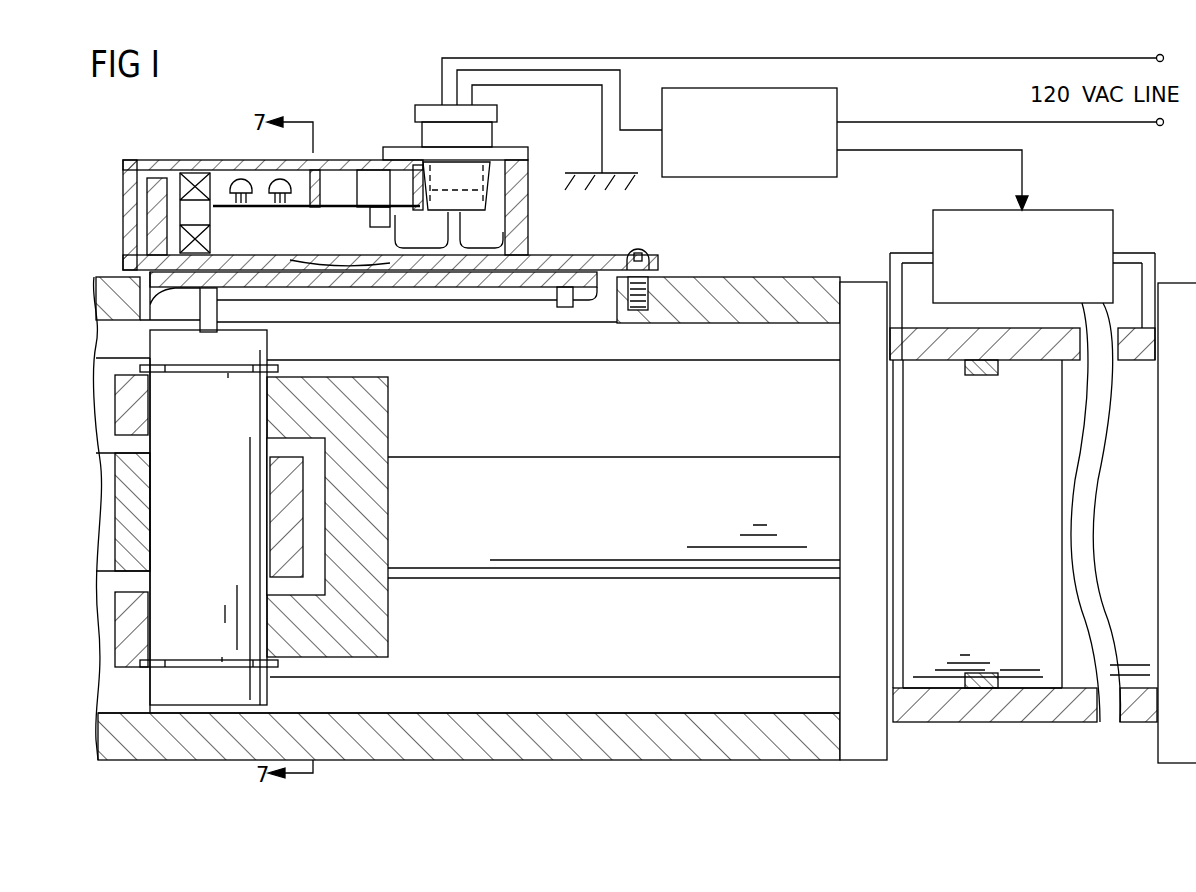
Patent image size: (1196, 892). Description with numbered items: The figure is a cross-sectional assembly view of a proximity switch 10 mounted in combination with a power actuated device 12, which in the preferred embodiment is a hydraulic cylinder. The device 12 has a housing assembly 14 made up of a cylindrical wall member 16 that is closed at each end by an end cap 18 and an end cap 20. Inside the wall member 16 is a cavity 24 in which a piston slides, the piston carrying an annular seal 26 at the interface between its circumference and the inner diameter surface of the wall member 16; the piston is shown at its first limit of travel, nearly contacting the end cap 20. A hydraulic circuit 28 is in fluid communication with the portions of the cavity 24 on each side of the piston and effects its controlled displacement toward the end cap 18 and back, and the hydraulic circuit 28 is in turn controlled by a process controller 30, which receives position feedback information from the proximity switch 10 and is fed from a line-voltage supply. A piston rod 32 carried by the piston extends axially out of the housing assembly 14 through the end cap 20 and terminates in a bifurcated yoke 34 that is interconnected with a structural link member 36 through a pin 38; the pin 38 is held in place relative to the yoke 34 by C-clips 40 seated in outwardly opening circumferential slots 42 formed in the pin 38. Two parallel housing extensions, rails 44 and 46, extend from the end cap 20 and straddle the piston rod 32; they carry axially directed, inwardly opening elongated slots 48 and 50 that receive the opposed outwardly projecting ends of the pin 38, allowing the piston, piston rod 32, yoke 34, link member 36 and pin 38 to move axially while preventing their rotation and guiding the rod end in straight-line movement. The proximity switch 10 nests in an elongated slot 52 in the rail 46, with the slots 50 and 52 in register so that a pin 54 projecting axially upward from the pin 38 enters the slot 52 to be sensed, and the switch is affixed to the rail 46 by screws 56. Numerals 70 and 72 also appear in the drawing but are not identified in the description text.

The proximity switch 10 is at (345, 122).
The power actuated device 12 is at (836, 257).
The housing assembly 14 is at (1015, 741).
The cylindrical wall member 16 is at (955, 700).
The end cap 18 is at (1182, 290).
The end cap 20 is at (845, 418).
The cavity 24 is at (1128, 690).
The annular seal 26 is at (978, 376).
The hydraulic circuit 28 is at (1088, 210).
The process controller 30 is at (840, 103).
The piston rod 32 is at (597, 518).
The bifurcated yoke 34 is at (125, 395).
The structural link member 36 is at (115, 513).
The pin 38 is at (217, 531).
The C-clips 40 is at (278, 370).
The circumferential slots 42 is at (228, 375).
The rail 44 is at (828, 752).
The rail 46 is at (750, 298).
The elongated slot 48 is at (692, 695).
The elongated slot 50 is at (722, 340).
The elongated slot 52 is at (620, 298).
The pin 54 is at (217, 307).
The screws 56 is at (642, 254).
The bracket 70 is at (553, 300).
The end cap 72 is at (150, 325).